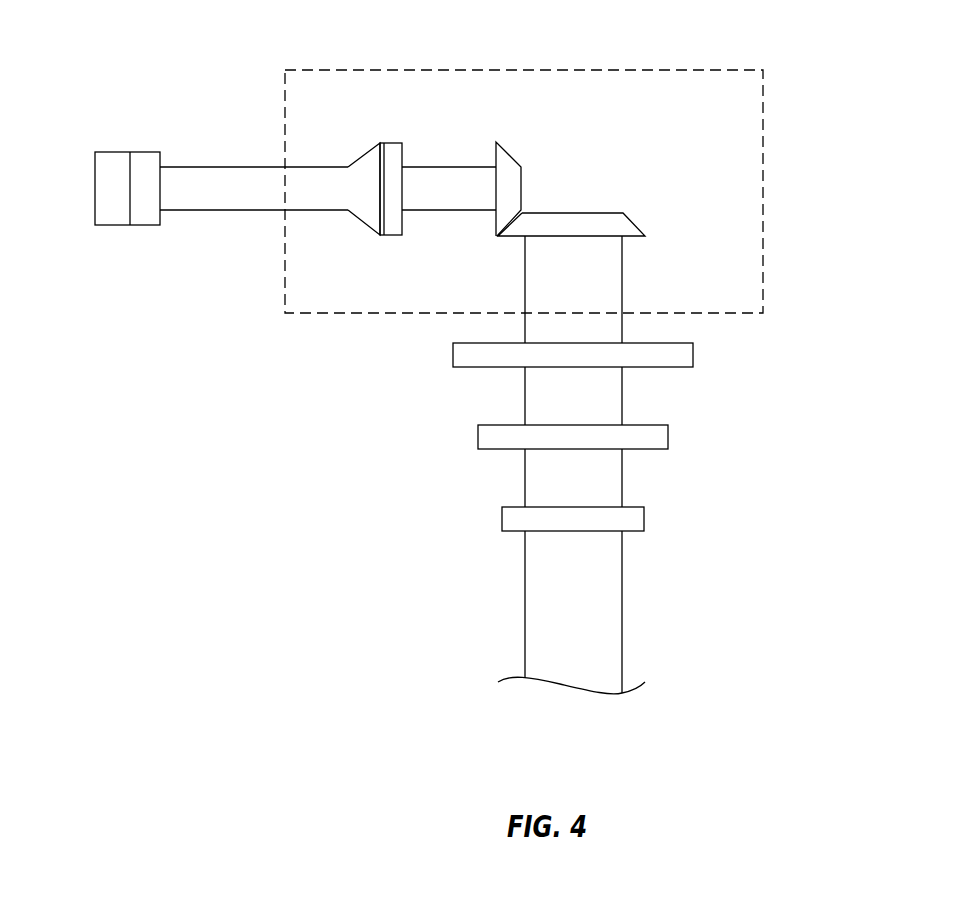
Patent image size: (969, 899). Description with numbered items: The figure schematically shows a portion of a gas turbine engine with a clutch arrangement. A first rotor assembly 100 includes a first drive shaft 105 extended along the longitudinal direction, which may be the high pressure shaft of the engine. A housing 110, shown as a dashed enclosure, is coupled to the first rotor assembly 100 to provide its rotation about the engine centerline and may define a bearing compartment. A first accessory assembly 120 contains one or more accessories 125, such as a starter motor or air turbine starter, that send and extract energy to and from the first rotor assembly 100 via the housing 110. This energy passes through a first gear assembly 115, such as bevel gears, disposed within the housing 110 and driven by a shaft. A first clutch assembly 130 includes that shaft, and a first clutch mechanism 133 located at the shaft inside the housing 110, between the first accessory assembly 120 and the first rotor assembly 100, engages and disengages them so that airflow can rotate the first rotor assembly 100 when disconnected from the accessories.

The first rotor assembly 100 is at (700, 433).
The first drive shaft 105 is at (602, 587).
The housing 110 is at (763, 118).
The first gear assembly 115 is at (541, 201).
The first accessory assembly 120 is at (117, 165).
The accessories 125 is at (148, 213).
The first clutch assembly 130 is at (405, 120).
The first clutch mechanism 133 is at (390, 227).